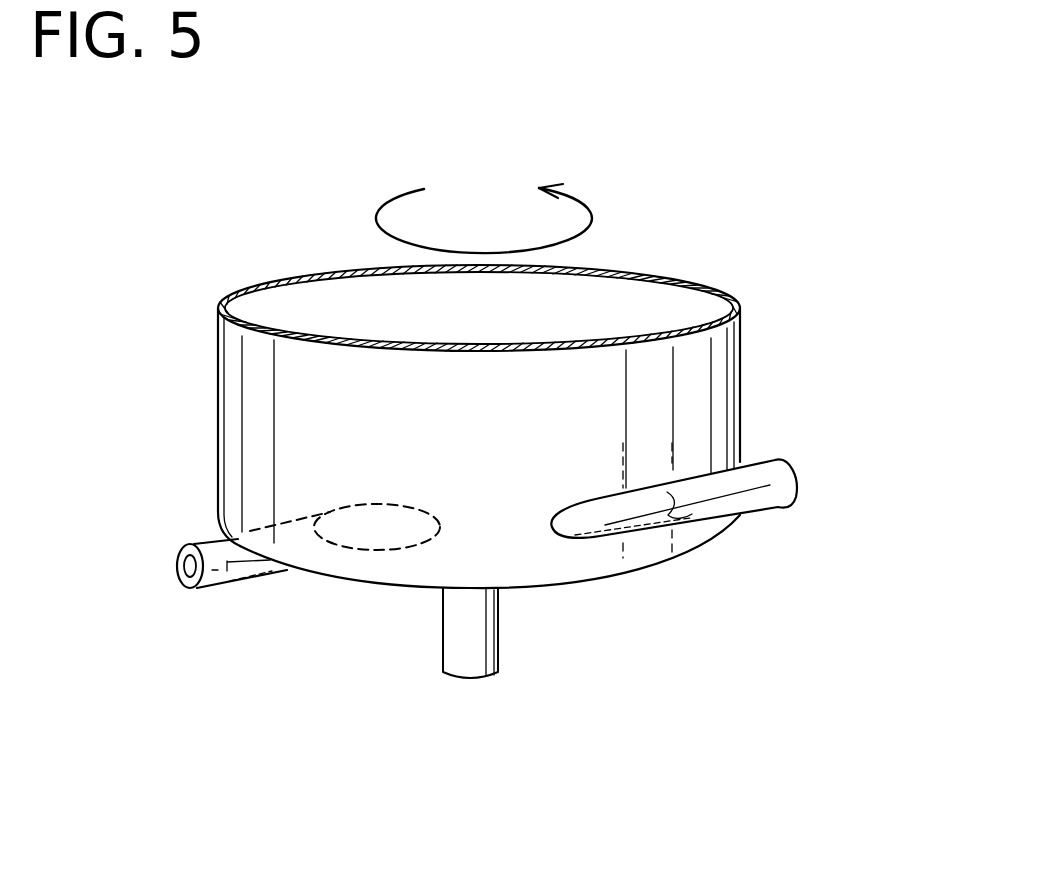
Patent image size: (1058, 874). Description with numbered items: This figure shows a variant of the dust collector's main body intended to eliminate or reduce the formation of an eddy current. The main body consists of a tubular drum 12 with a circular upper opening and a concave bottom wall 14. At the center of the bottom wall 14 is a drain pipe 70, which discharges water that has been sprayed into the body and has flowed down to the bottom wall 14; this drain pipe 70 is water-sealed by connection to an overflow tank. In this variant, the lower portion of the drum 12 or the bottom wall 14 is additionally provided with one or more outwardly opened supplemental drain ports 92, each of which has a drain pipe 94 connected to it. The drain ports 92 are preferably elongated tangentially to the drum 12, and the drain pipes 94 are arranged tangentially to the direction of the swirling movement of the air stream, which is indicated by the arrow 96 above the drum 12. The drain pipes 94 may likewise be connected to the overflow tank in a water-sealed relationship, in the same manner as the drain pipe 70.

The drum 12 is at (723, 358).
The bottom wall 14 is at (660, 568).
The drain pipe 70 is at (478, 638).
The supplemental drain port 92 is at (400, 547).
The drain pipe 94 is at (232, 583).
The arrow 96 is at (378, 206).